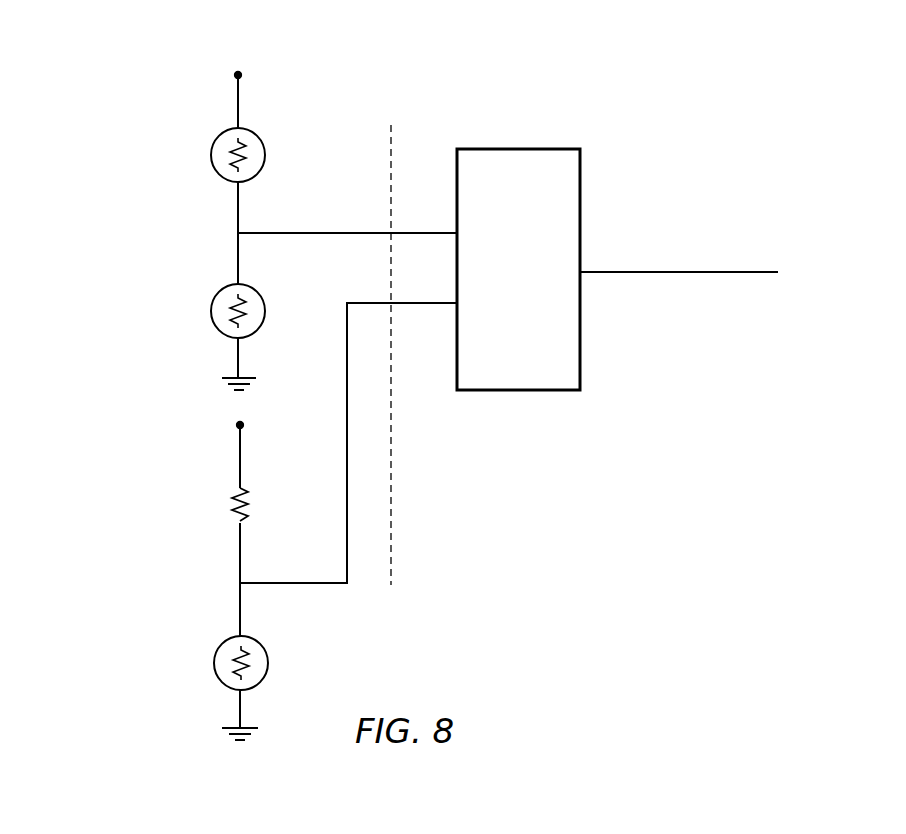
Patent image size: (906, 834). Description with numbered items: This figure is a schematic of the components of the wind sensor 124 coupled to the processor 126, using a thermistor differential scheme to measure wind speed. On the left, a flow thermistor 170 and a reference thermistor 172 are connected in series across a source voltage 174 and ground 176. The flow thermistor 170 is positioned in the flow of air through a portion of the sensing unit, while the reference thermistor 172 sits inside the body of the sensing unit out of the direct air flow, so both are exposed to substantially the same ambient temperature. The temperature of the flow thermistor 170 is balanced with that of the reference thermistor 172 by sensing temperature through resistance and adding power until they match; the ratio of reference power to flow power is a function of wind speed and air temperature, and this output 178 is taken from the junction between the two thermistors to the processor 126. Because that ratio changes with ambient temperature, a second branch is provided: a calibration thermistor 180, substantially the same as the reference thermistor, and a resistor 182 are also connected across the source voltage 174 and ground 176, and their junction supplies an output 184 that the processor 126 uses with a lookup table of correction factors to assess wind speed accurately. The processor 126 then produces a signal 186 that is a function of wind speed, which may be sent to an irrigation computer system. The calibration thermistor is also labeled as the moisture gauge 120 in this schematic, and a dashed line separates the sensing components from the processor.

The moisture gauge 120 is at (216, 676).
The wind sensor 124 is at (138, 528).
The processor 126 is at (531, 272).
The flow thermistor 170 is at (212, 148).
The reference thermistor 172 is at (215, 300).
The source voltage 174 is at (238, 72).
The ground 176 is at (230, 377).
The output 178 is at (274, 232).
The calibration thermistor 180 is at (216, 650).
The resistor 182 is at (232, 493).
The output 184 is at (286, 585).
The signal 186 is at (736, 271).